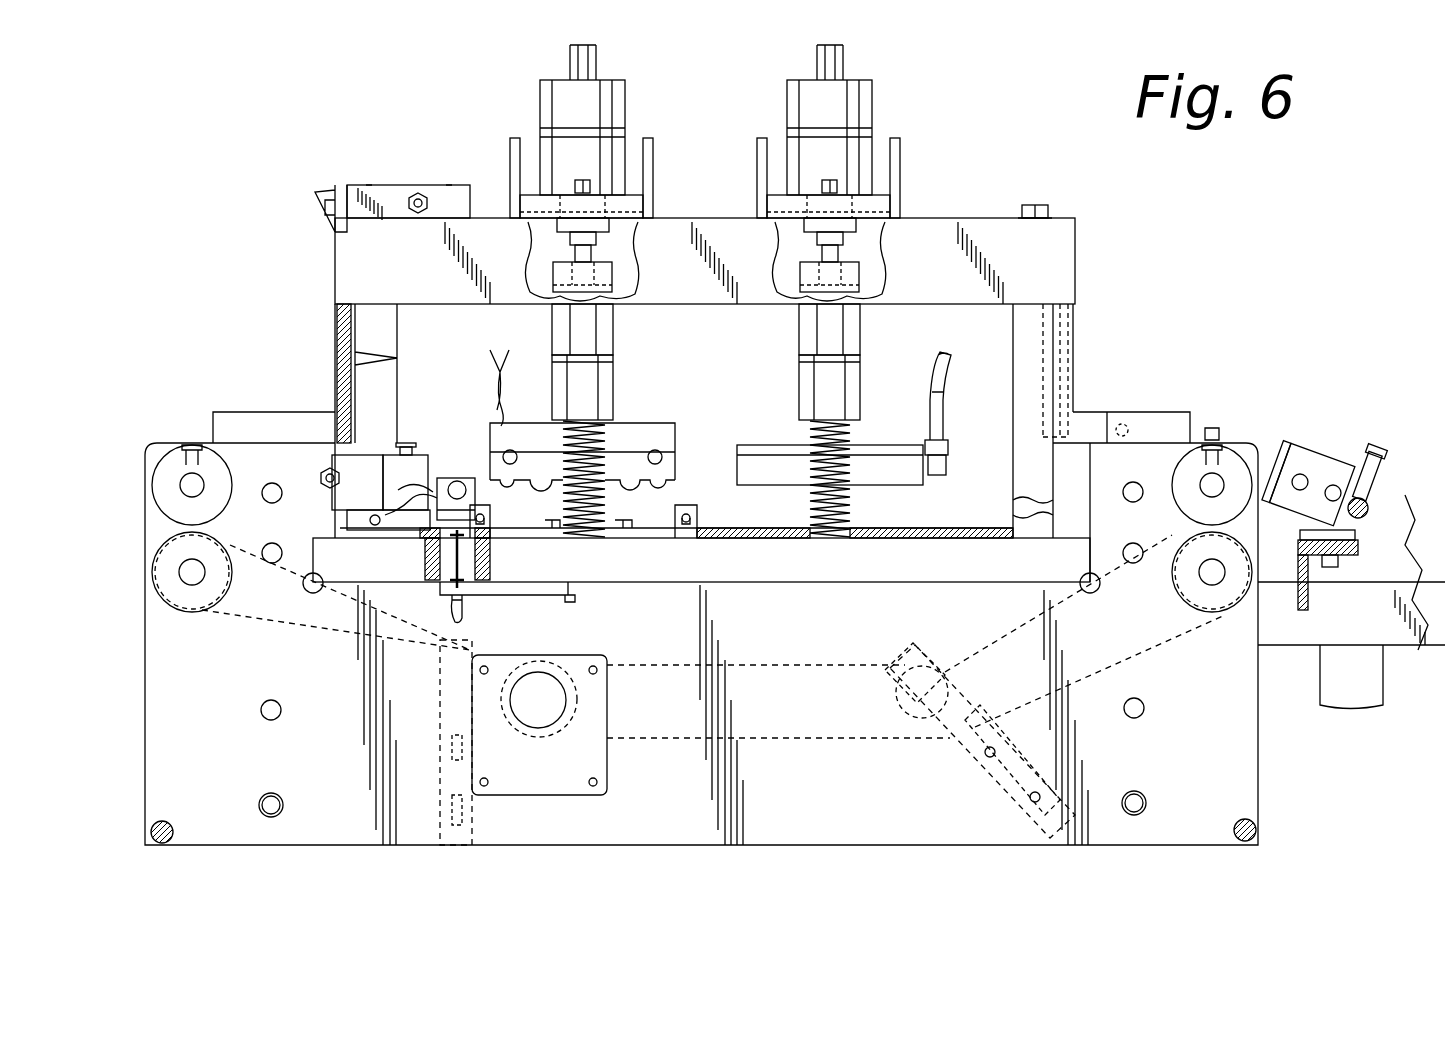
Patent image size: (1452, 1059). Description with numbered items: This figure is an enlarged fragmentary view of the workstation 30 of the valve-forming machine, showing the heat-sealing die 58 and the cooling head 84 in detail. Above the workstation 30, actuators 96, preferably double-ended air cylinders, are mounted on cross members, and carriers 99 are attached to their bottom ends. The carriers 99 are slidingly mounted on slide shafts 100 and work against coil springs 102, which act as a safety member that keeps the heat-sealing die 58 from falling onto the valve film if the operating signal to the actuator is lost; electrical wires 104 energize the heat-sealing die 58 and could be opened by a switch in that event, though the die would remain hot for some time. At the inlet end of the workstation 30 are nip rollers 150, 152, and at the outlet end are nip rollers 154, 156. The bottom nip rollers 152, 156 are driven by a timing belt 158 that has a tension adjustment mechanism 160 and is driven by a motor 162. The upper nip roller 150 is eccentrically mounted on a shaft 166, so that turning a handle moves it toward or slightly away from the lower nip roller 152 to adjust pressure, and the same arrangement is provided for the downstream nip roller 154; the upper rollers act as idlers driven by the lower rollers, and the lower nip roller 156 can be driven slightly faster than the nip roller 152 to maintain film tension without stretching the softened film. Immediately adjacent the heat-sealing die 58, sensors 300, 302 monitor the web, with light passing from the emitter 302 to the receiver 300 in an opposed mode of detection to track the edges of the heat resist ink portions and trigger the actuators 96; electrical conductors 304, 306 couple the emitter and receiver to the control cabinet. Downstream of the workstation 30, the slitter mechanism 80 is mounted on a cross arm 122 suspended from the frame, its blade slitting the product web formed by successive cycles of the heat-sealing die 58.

The workstation 30 is at (950, 150).
The heat-sealing die 58 is at (667, 420).
The slitter mechanism 80 is at (1330, 460).
The cooling head 84 is at (870, 440).
The actuators 96 is at (612, 104).
The carriers 99 is at (600, 376).
The slide shafts 100 is at (580, 330).
The coil springs 102 is at (608, 498).
The electrical wires 104 is at (497, 388).
The cross arm 122 is at (1270, 460).
The upper inlet nip roller 150 is at (218, 483).
The lower inlet nip roller 152 is at (200, 598).
The upper outlet nip roller 154 is at (1188, 480).
The lower outlet nip roller 156 is at (1225, 600).
The timing belt 158 is at (665, 665).
The tension adjustment mechanism 160 is at (468, 656).
The motor 162 is at (565, 785).
The shaft 166 is at (192, 485).
The receiver sensor 300 is at (457, 478).
The emitter sensor 302 is at (491, 560).
The electrical conductor 304 is at (346, 514).
The electrical conductor 306 is at (465, 612).